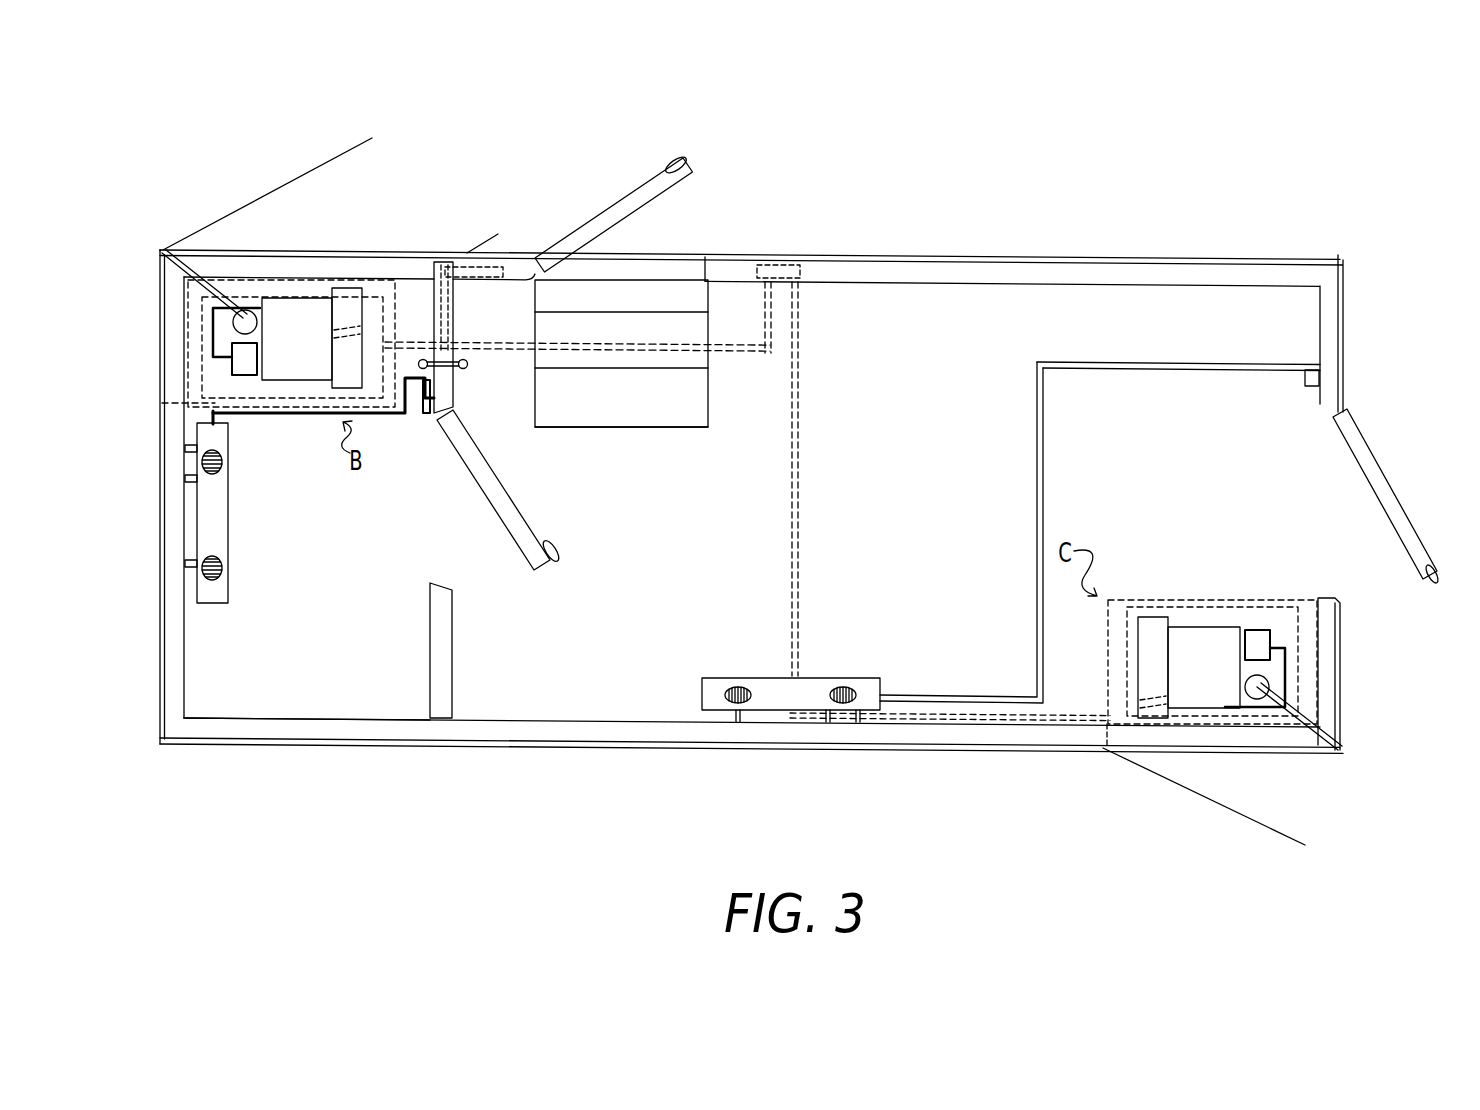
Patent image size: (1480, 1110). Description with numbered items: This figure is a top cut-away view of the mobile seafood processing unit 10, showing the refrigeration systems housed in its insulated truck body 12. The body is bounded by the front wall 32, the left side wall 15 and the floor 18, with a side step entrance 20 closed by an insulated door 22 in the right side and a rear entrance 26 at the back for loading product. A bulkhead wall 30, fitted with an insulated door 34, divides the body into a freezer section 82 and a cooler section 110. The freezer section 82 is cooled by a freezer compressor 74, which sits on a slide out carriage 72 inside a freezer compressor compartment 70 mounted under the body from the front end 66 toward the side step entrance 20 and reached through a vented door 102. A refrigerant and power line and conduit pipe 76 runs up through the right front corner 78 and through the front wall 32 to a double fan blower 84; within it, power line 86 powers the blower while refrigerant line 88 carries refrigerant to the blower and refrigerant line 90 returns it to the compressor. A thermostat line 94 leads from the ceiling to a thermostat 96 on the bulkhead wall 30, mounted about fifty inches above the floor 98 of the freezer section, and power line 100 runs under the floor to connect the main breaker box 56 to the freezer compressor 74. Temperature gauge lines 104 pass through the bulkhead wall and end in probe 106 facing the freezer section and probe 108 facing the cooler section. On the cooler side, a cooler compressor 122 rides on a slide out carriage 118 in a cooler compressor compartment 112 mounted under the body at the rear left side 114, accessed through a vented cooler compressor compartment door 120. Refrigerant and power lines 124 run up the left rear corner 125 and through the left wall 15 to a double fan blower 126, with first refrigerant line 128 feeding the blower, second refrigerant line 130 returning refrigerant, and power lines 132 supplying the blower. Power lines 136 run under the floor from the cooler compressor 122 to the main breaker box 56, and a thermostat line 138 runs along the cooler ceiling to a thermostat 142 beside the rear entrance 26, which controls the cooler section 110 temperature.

The mobile seafood processing unit 10 is at (1000, 182).
The insulated truck body 12 is at (1200, 305).
The left side wall 15 is at (1217, 738).
The floor 18 is at (668, 495).
The side step entrance 20 is at (660, 247).
The insulated door 22 is at (595, 215).
The rear entrance 26 is at (1352, 563).
The bulkhead wall 30 is at (434, 298).
The front wall 32 is at (170, 622).
The insulated door 34 is at (512, 512).
The main breaker box 56 is at (793, 264).
The front end 66 is at (160, 312).
The freezer compressor compartment 70 is at (257, 407).
The slide out carriage 72 is at (193, 332).
The freezer compressor 74 is at (283, 355).
The refrigerant and power line and conduit pipe 76 is at (160, 250).
The right front corner 78 is at (168, 256).
The freezer section 82 is at (258, 693).
The blower 84 is at (220, 590).
The power line 86 is at (190, 444).
The refrigerant line 88 is at (187, 478).
The refrigerant line 90 is at (190, 562).
The thermostat line 94 is at (288, 418).
The thermostat 96 is at (421, 412).
The floor 98 is at (332, 660).
The power line 100 is at (484, 341).
The door 102 is at (320, 165).
The temperature gauge lines 104 is at (440, 375).
The temperature probe 106 is at (421, 359).
The temperature probe 108 is at (468, 364).
The cooler section 110 is at (1007, 643).
The cooler compressor compartment 112 is at (1158, 598).
The rear left side 114 is at (1305, 755).
The slide out carriage 118 is at (1123, 603).
The cooler compressor compartment door 120 is at (1163, 780).
The cooler compressor 122 is at (1182, 670).
The refrigerant and power lines 124 is at (1342, 747).
The left rear corner 125 is at (1338, 705).
The blower 126 is at (822, 677).
The first refrigerant line 128 is at (820, 717).
The second refrigerant line 130 is at (867, 717).
The power lines 132 is at (733, 717).
The power lines 136 is at (797, 517).
The thermostat line 138 is at (1068, 373).
The thermostat 142 is at (1308, 394).